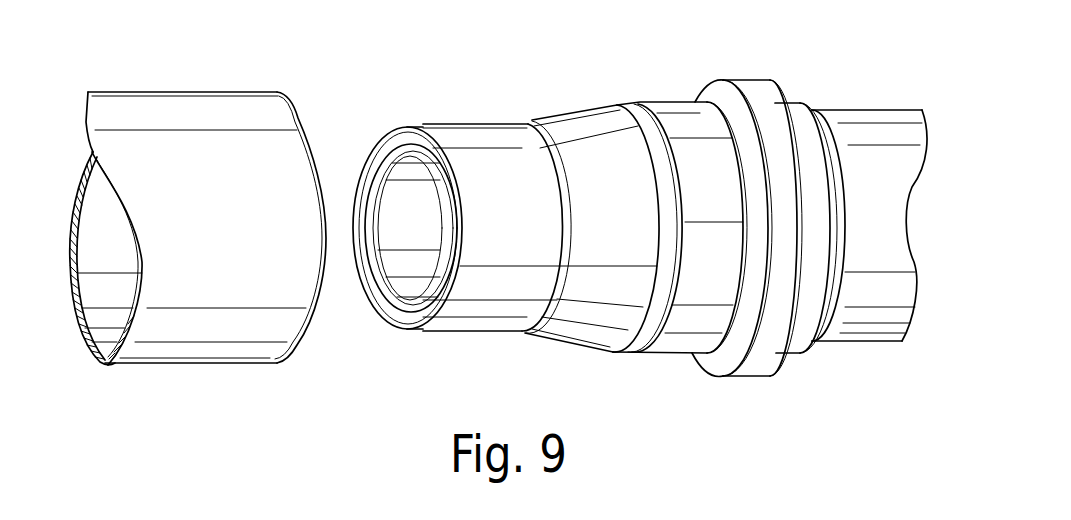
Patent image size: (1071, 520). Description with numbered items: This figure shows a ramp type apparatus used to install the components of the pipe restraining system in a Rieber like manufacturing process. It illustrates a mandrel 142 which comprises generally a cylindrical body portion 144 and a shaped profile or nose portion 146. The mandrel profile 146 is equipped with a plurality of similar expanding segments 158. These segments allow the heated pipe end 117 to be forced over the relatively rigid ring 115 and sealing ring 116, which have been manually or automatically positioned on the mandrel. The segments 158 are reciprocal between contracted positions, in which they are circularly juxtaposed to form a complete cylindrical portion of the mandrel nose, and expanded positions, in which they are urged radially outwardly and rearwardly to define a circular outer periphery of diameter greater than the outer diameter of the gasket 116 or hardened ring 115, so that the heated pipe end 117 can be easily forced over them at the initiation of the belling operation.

The heated pipe end 117 is at (241, 113).
The mandrel 142 is at (621, 49).
The shaped profile or nose portion 146 is at (585, 103).
The expanding segments 158 is at (702, 157).
The rigid ring 115 is at (786, 117).
The sealing ring 116 is at (820, 123).
The cylindrical body portion 144 is at (877, 120).